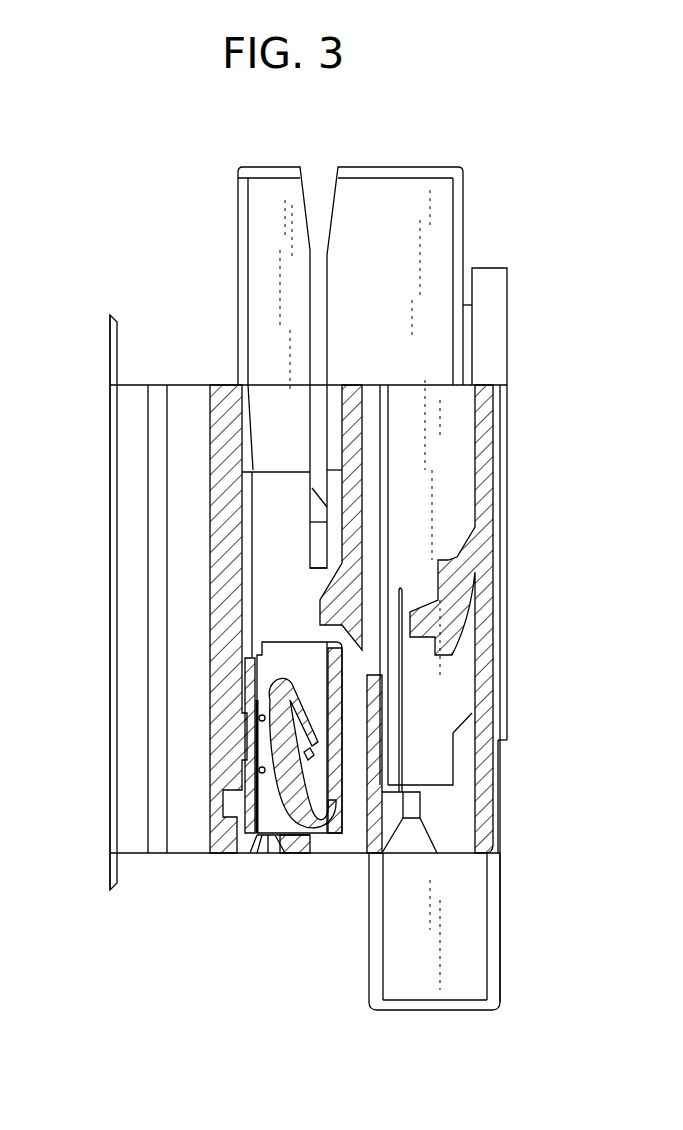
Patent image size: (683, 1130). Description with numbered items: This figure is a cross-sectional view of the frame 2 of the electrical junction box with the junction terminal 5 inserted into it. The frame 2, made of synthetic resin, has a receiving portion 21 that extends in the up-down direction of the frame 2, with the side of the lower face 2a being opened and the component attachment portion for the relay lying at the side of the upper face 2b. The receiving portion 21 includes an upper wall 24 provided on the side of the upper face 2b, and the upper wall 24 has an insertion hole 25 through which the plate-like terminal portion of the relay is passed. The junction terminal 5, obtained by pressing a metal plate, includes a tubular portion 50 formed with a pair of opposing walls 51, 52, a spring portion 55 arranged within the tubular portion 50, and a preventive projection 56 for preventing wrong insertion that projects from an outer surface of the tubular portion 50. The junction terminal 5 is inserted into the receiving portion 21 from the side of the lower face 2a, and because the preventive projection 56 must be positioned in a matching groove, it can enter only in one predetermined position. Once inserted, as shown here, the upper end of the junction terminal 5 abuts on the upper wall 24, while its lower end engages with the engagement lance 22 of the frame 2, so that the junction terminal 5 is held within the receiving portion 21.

The frame 2 is at (157, 378).
The lower face 2a is at (226, 385).
The upper face 2b is at (217, 853).
The receiving portion 21 is at (285, 420).
The engagement lance 22 is at (330, 605).
The junction terminal 5 is at (297, 762).
The opposing wall 51 is at (320, 722).
The opposing wall 52 is at (243, 724).
The preventive projection 56 is at (248, 785).
The tubular portion 50 is at (267, 837).
The spring portion 55 is at (275, 837).
The upper wall 24 is at (298, 848).
The insertion hole 25 is at (260, 835).